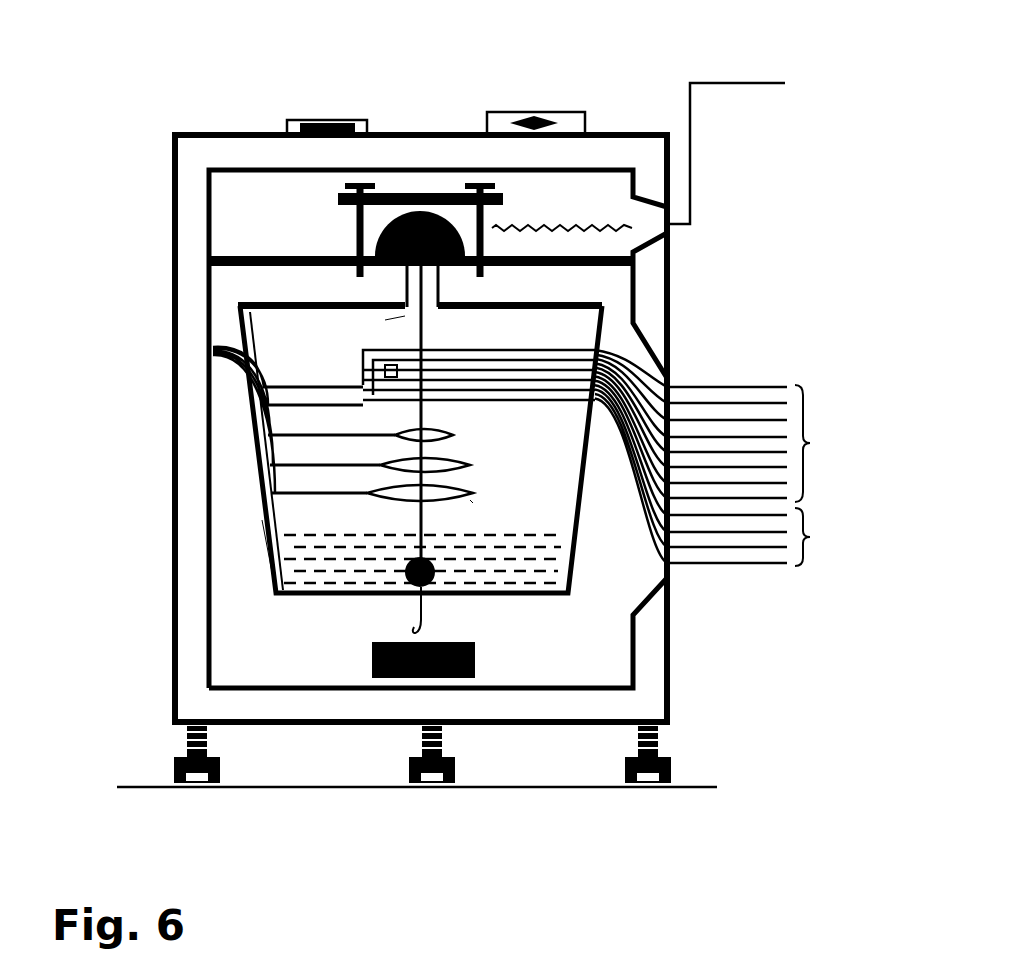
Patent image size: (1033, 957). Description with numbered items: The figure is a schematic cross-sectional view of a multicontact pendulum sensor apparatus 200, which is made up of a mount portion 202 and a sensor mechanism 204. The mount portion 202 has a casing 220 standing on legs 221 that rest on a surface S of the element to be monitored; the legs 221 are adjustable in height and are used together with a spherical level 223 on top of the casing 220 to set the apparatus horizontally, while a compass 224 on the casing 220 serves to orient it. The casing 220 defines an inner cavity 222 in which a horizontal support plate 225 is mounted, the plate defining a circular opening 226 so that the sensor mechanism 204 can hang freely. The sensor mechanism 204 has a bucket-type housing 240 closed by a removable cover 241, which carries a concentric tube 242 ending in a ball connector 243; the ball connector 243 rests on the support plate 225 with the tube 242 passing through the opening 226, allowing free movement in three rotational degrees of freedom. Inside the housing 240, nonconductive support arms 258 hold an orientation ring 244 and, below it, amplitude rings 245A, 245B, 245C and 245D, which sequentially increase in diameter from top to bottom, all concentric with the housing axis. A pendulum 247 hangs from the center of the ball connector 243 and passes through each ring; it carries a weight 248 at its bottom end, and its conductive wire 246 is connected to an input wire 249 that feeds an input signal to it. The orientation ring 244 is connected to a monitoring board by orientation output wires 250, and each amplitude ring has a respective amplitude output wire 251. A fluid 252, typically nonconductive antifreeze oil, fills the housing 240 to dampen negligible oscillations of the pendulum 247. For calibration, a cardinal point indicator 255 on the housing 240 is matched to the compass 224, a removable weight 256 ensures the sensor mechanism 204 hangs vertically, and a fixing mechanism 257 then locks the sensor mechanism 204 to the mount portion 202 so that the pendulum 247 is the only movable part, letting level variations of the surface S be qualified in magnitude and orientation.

The sensor apparatus 200 is at (252, 80).
The mount portion 202 is at (160, 565).
The sensor mechanism 204 is at (238, 465).
The casing 220 is at (188, 622).
The legs 221 is at (718, 740).
The inner cavity 222 is at (226, 410).
The spherical level 223 is at (355, 119).
The compass 224 is at (555, 110).
The support plate 225 is at (265, 255).
The circular opening 226 is at (377, 276).
The housing 240 is at (537, 594).
The cover 241 is at (552, 302).
The tube 242 is at (440, 293).
The ball connector 243 is at (418, 200).
The orientation ring 244 is at (428, 368).
The amplitude ring 245A is at (430, 408).
The amplitude ring 245B is at (450, 440).
The amplitude ring 245C is at (465, 472).
The amplitude ring 245D is at (466, 500).
The wire 246 is at (405, 316).
The pendulum 247 is at (365, 598).
The weight 248 is at (468, 597).
The input wire 249 is at (733, 80).
The orientation output wires 250 is at (817, 410).
The amplitude output wire 251 is at (725, 475).
The fluid 252 is at (282, 556).
The cardinal point indicator 255 is at (613, 332).
The weight 256 is at (478, 664).
The fixing mechanism 257 is at (492, 180).
The support arms 258 is at (212, 350).
The surface S is at (128, 787).